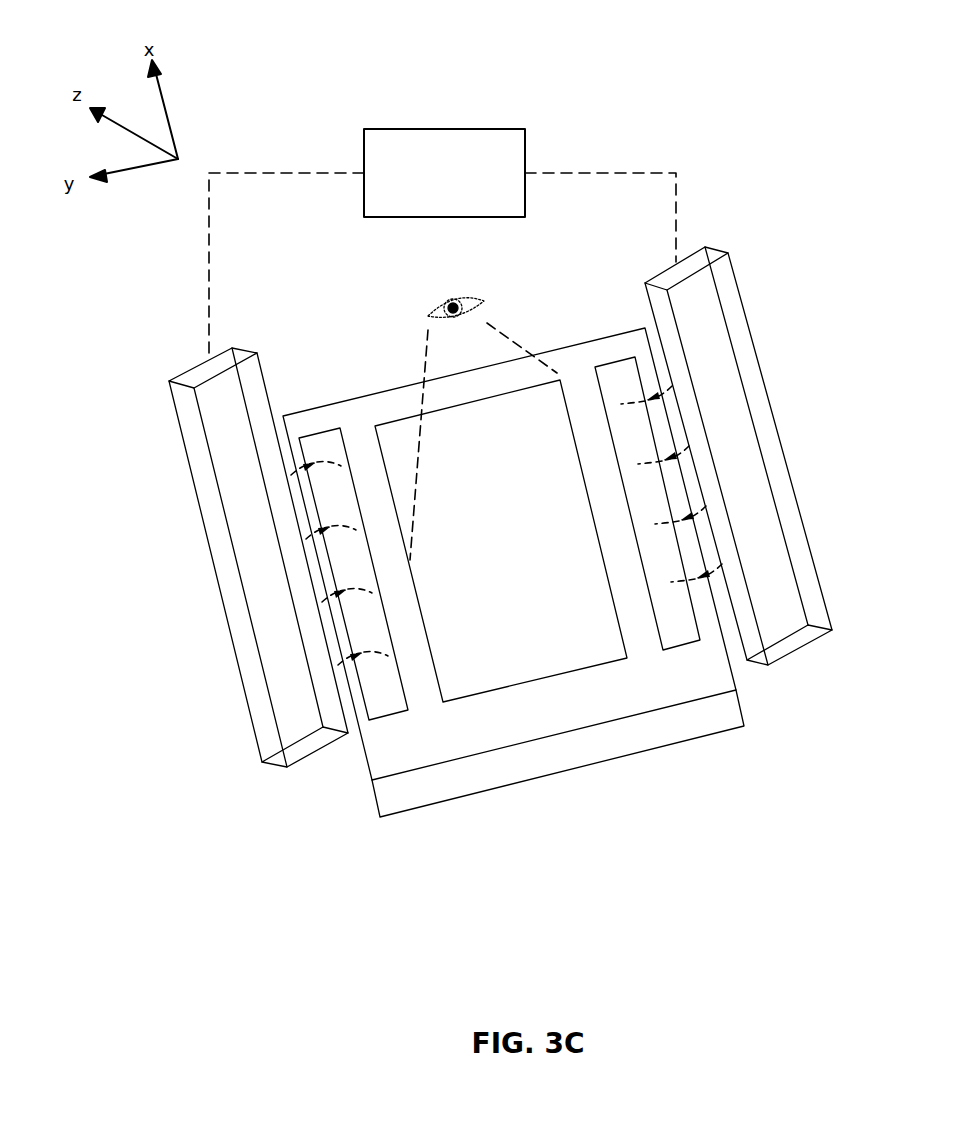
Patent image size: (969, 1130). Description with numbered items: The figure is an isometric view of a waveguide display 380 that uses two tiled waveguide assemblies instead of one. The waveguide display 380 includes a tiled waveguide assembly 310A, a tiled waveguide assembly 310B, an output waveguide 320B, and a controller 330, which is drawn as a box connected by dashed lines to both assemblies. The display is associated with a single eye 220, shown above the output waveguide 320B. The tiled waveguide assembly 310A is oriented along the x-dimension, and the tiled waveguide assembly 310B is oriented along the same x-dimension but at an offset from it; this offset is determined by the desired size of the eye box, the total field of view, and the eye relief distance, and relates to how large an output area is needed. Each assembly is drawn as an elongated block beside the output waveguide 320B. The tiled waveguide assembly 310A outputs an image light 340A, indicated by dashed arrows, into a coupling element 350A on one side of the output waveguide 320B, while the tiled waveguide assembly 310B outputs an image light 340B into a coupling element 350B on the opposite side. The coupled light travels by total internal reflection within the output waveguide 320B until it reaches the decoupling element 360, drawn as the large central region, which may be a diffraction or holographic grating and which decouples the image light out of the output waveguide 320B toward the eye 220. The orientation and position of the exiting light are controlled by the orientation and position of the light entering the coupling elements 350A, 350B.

The waveguide display 380 is at (53, 30).
The controller 330 is at (428, 195).
The eye 220 is at (431, 276).
The tiled waveguide assembly 310A is at (243, 686).
The tiled waveguide assembly 310B is at (745, 313).
The output waveguide 320B is at (673, 745).
The image light 340A is at (317, 460).
The image light 340B is at (635, 397).
The coupling element 350A is at (389, 717).
The coupling element 350B is at (683, 648).
The decoupling element 360 is at (539, 682).